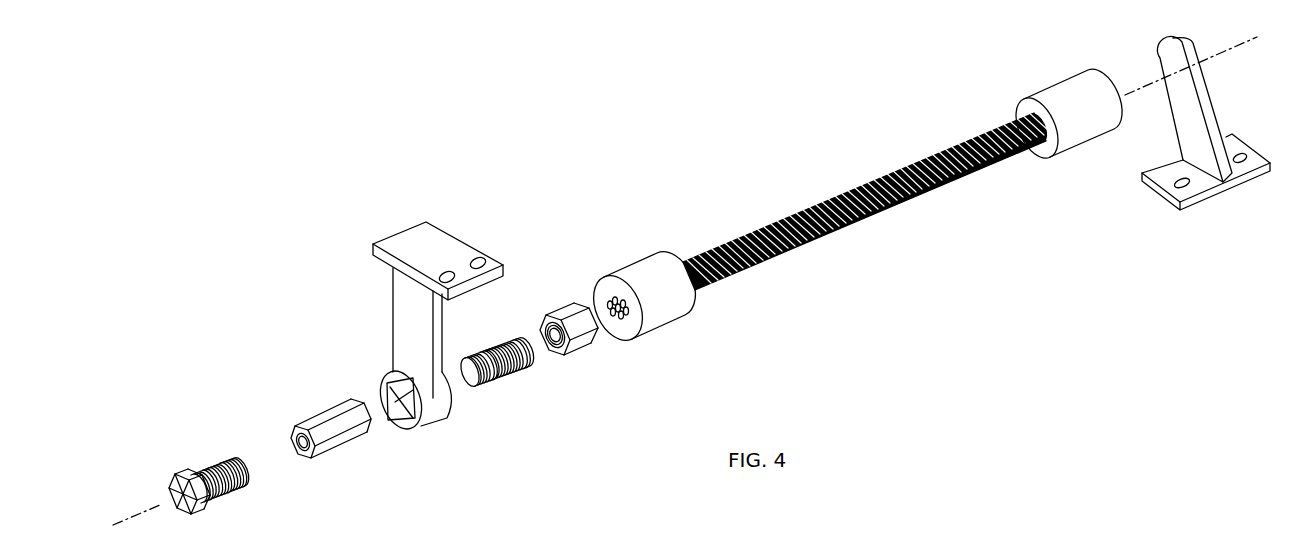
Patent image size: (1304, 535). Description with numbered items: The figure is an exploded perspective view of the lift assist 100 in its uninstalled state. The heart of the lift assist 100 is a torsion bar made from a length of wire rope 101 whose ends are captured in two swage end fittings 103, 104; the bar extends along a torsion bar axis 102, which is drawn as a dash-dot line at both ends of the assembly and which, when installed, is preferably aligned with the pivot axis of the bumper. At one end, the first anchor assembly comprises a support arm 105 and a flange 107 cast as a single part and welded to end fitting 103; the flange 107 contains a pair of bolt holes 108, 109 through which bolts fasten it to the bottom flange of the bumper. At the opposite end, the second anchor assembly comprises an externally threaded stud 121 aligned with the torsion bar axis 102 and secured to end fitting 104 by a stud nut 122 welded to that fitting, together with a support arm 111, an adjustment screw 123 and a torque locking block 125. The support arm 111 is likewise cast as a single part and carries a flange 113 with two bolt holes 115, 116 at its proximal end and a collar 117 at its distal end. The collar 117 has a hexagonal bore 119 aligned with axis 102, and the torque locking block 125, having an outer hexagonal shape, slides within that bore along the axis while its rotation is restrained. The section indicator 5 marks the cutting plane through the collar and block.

The lift assist 100 is at (298, 131).
The wire rope 101 is at (880, 178).
The torsion bar axis 102 is at (160, 505).
The swage end fitting 103 is at (1068, 92).
The swage end fitting 104 is at (648, 278).
The support arm 105 is at (1175, 42).
The flange 107 is at (1155, 194).
The bolt hole 108 is at (1180, 181).
The bolt hole 109 is at (1240, 156).
The support arm 111 is at (403, 307).
The flange 113 is at (373, 252).
The bolt hole 115 is at (447, 272).
The bolt hole 116 is at (478, 258).
The collar 117 is at (395, 376).
The hexagonal bore 119 is at (396, 418).
The externally threaded stud 121 is at (498, 380).
The stud nut 122 is at (577, 348).
The adjustment screw 123 is at (225, 493).
The torque locking block 125 is at (335, 447).
The section line for FIG. 5 is at (365, 418).